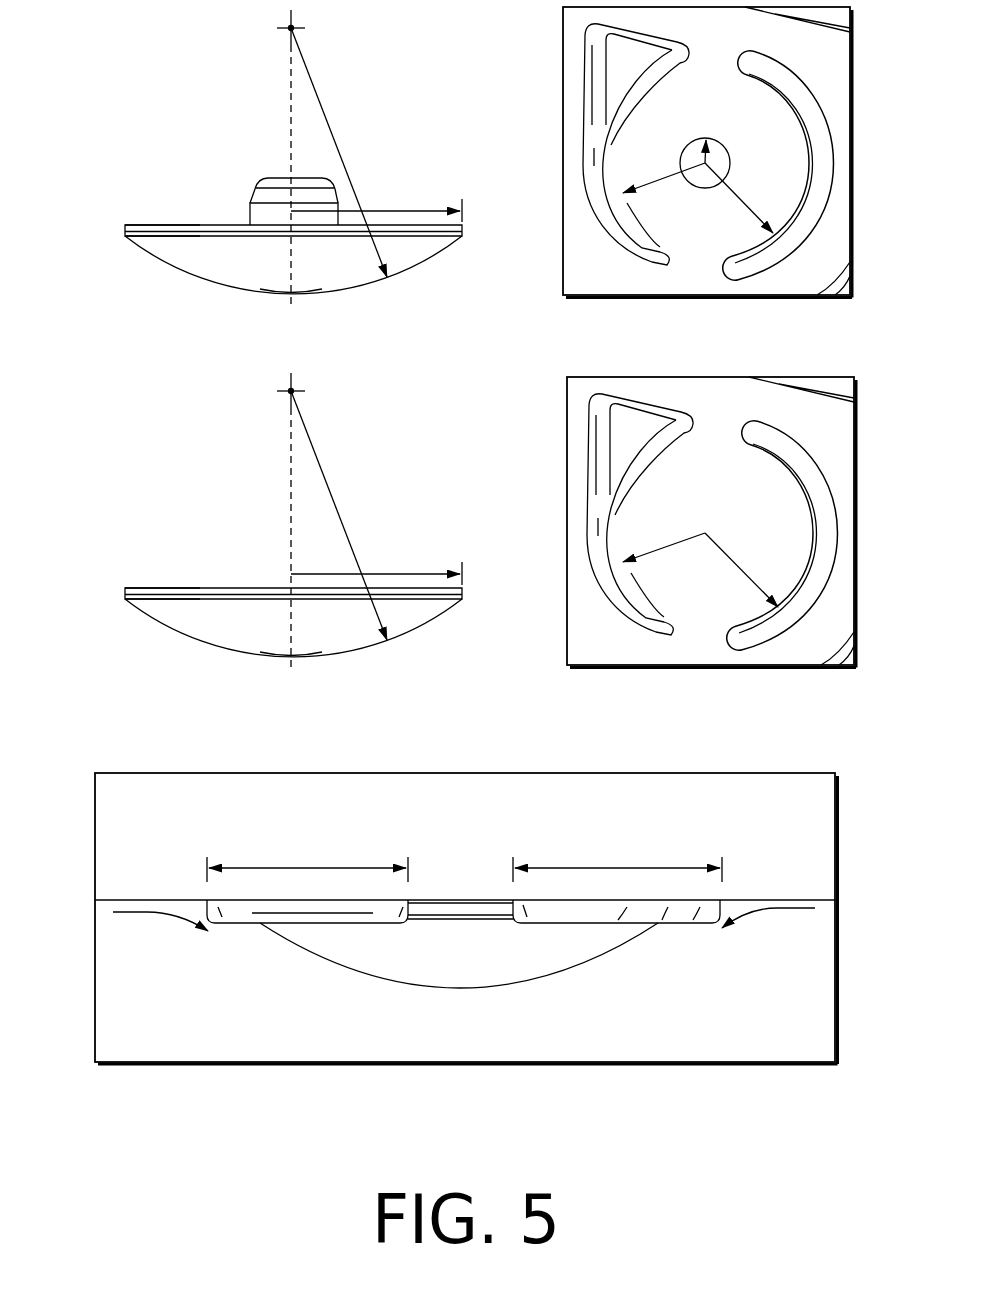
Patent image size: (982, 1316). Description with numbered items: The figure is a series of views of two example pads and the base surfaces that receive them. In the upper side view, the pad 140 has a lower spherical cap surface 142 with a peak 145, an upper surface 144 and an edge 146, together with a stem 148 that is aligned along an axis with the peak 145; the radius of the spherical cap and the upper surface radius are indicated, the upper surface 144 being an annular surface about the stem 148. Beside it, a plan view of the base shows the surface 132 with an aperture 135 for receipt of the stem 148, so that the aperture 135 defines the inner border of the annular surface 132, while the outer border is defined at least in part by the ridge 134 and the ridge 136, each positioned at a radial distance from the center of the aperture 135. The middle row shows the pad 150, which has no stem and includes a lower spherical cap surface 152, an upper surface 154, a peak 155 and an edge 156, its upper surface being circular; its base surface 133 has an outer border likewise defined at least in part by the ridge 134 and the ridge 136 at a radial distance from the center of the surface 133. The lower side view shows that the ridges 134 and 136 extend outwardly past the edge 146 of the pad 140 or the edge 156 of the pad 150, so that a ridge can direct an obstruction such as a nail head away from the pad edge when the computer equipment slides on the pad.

The surface 132 is at (723, 233).
The surface 133 is at (725, 526).
The ridge 134 is at (610, 228).
The aperture 135 is at (722, 143).
The ridge 136 is at (791, 76).
The pad 140 is at (445, 960).
The lower spherical cap surface 142 is at (365, 287).
The upper surface 144 is at (127, 223).
The peak 145 is at (291, 297).
The edge 146 is at (125, 237).
The stem 148 is at (251, 197).
The pad 150 is at (518, 960).
The lower spherical cap surface 152 is at (365, 650).
The upper surface 154 is at (127, 586).
The peak 155 is at (291, 660).
The edge 156 is at (125, 600).